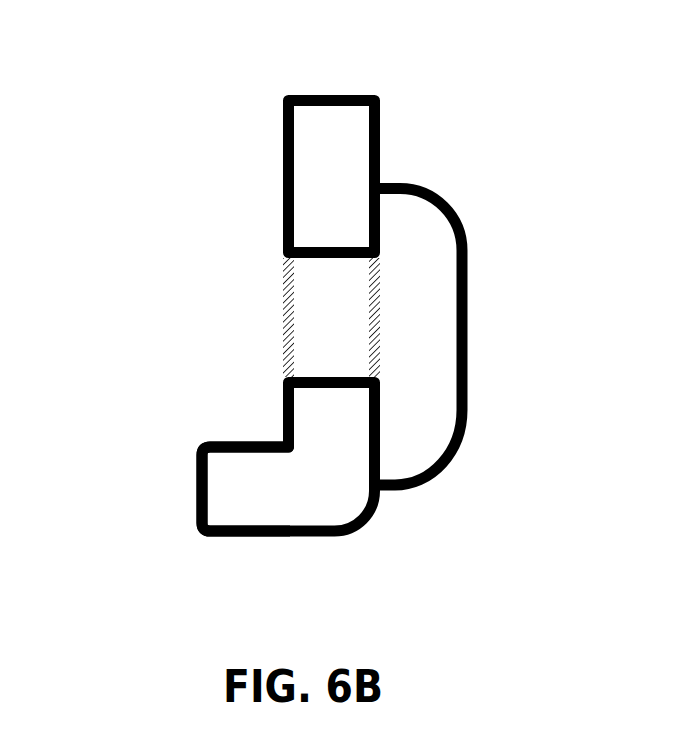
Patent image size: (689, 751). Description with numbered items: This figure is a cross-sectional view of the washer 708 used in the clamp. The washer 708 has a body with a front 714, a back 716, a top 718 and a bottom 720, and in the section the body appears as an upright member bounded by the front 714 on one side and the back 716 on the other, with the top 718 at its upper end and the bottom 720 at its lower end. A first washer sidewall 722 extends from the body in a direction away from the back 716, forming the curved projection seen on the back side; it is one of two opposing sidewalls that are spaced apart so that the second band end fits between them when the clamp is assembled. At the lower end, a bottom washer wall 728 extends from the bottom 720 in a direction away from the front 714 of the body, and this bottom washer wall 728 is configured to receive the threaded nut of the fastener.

The washer 708 is at (221, 63).
The front 714 is at (283, 165).
The back 716 is at (380, 163).
The top 718 is at (327, 97).
The bottom 720 is at (303, 535).
The first washer sidewall 722 is at (425, 327).
The bottom washer wall 728 is at (228, 485).